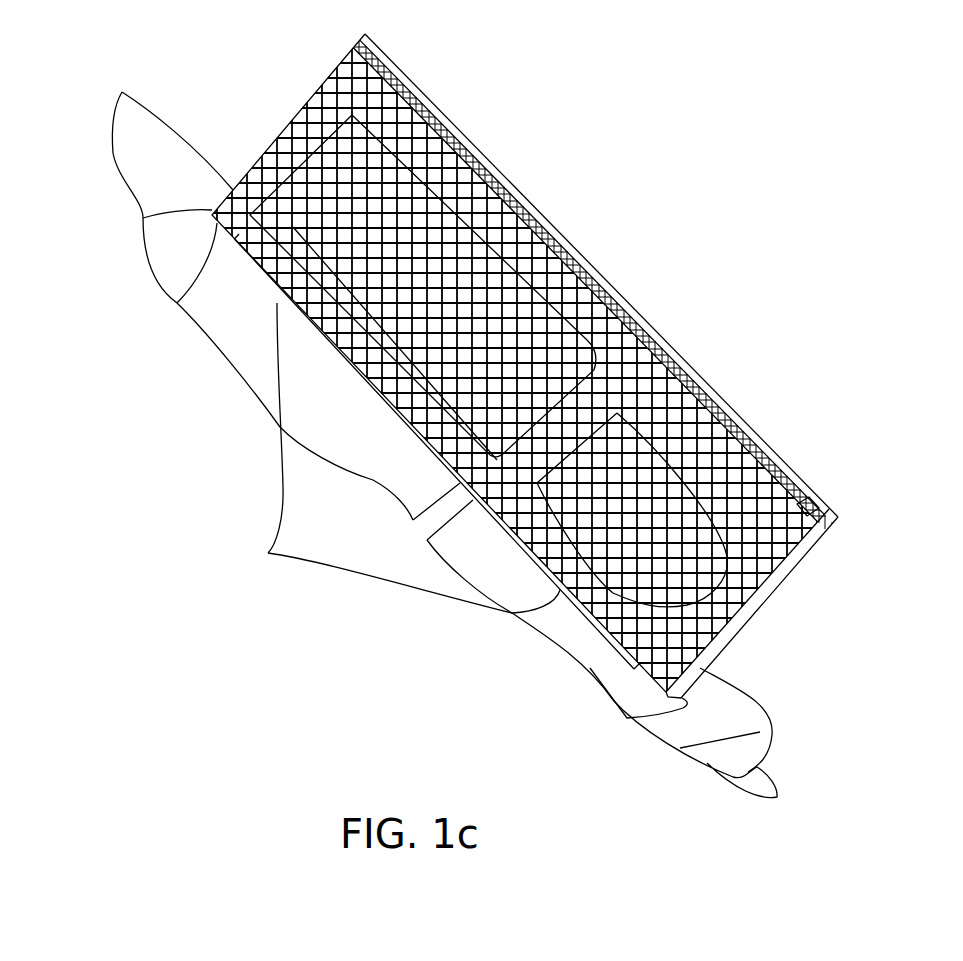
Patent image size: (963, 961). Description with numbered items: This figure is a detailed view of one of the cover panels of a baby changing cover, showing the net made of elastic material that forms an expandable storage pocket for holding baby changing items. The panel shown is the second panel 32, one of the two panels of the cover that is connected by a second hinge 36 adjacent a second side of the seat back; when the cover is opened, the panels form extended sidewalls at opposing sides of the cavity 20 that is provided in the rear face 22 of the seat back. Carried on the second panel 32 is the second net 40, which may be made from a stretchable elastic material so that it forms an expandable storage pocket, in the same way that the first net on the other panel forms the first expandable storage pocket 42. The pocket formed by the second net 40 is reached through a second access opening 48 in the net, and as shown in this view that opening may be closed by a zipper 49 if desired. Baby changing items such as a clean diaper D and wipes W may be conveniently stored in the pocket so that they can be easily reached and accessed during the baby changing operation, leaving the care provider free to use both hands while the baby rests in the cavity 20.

The cavity 20 is at (220, 313).
The rear face 22 is at (135, 162).
The second panel 32 is at (455, 118).
The second hinge 36 is at (275, 562).
The second net 40 is at (668, 355).
The first expandable storage pocket 42 is at (305, 112).
The second access opening 48 is at (566, 252).
The zipper 49 is at (795, 490).
The wipes W is at (503, 168).
The diaper D is at (712, 392).